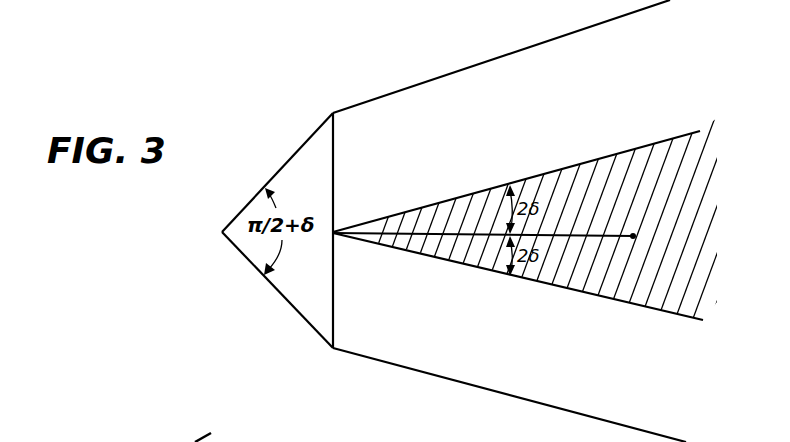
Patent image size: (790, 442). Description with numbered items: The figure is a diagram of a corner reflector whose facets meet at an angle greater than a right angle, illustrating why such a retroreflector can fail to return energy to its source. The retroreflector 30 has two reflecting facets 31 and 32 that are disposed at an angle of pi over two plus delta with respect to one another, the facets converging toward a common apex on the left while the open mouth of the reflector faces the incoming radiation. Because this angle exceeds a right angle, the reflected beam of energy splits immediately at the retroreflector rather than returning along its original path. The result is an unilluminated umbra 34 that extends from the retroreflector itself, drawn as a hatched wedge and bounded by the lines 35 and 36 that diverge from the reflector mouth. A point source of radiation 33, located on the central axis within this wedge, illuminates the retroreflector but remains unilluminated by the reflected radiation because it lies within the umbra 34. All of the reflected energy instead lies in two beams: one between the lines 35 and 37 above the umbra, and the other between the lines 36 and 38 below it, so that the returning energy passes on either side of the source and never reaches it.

The retroreflector 30 is at (256, 162).
The reflecting facet 31 is at (245, 200).
The reflecting facet 32 is at (239, 253).
The point source of radiation 33 is at (633, 236).
The umbra 34 is at (482, 224).
The line 35 is at (585, 164).
The line 36 is at (492, 271).
The line 37 is at (531, 47).
The line 38 is at (420, 373).